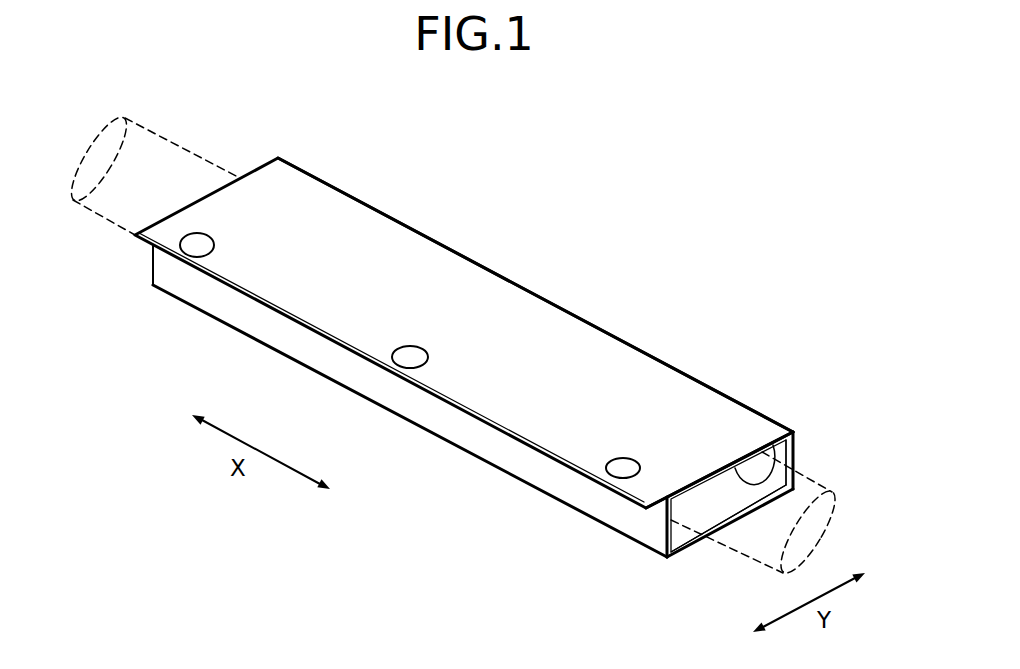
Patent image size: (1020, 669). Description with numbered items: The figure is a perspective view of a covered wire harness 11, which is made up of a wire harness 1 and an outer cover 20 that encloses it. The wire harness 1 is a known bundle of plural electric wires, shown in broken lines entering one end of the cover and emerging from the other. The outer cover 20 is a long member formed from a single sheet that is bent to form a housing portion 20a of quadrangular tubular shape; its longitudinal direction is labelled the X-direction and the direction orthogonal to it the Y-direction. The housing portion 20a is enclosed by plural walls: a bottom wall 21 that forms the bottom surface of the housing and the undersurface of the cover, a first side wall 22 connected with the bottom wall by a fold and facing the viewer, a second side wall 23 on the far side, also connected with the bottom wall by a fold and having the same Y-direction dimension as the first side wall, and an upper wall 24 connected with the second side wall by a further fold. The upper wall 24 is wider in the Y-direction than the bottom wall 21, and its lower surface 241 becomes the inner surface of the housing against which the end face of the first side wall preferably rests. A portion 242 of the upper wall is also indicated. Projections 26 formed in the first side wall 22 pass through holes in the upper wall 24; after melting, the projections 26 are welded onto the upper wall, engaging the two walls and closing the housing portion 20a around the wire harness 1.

The wire harness 1 is at (208, 157).
The covered wire harness 11 is at (538, 237).
The outer cover 20 is at (375, 205).
The housing portion 20a is at (691, 538).
The bottom wall 21 is at (685, 553).
The first side wall 22 is at (643, 525).
The second side wall 23 is at (797, 450).
The upper wall 24 is at (696, 401).
The lower surface 241 is at (773, 440).
The second portion of top plate 242 is at (628, 373).
The projections 26 is at (181, 245).